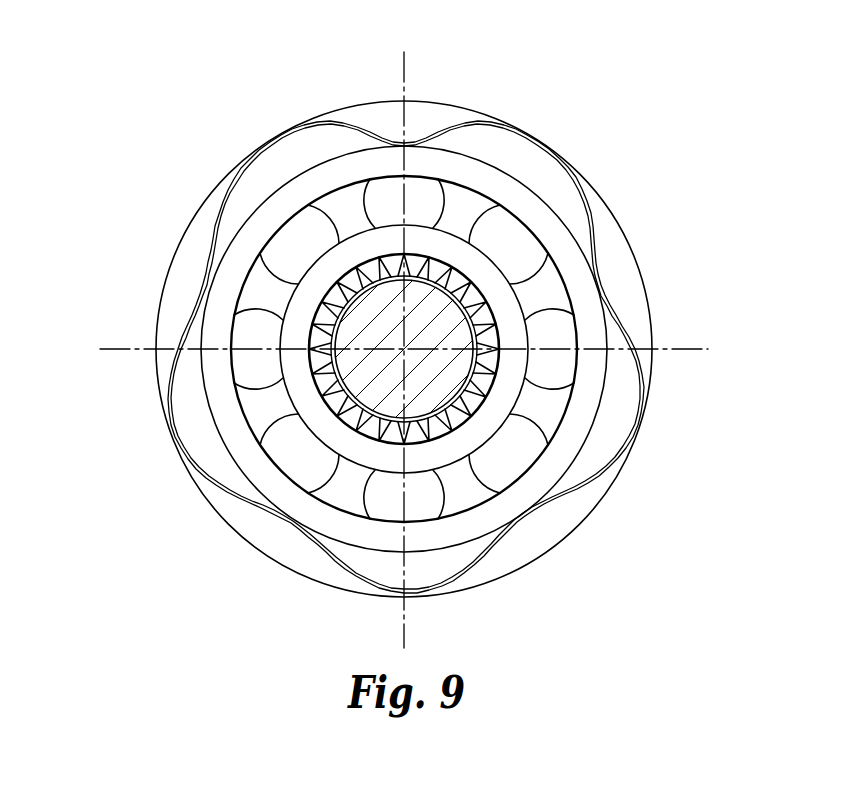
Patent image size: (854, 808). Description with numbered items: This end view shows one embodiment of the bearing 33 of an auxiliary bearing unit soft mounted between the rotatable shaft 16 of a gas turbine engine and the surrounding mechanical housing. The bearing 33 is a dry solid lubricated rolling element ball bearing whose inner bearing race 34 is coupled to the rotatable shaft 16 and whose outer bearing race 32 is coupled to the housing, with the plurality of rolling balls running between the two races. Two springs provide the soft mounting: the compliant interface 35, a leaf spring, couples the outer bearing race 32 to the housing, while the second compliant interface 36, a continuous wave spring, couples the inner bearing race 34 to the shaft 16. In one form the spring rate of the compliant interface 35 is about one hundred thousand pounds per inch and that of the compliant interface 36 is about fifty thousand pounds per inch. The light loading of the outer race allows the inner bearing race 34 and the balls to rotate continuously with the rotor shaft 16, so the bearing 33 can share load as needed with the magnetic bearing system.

The rotatable shaft 16 is at (430, 302).
The outer bearing race 32 is at (446, 170).
The bearing 33 is at (511, 453).
The inner bearing race 34 is at (293, 320).
The compliant interface 35 is at (537, 134).
The second compliant interface 36 is at (435, 437).